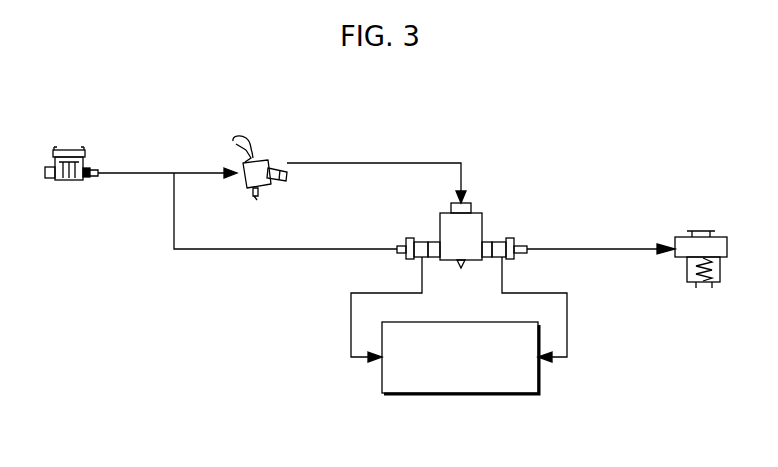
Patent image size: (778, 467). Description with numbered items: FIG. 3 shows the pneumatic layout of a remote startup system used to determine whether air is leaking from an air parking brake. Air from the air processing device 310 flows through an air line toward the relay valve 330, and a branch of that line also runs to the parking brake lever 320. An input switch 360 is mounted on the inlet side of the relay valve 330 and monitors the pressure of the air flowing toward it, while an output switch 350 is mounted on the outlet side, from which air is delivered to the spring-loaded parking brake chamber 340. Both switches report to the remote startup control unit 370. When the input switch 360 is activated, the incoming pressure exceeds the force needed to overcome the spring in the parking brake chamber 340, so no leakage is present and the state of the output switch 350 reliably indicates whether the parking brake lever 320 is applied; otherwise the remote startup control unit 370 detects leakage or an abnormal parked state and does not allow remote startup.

The air processing device 310 is at (86, 153).
The parking brake lever 320 is at (253, 142).
The relay valve 330 is at (478, 213).
The parking brake chamber 340 is at (709, 231).
The output switch 350 is at (512, 238).
The input switch 360 is at (407, 259).
The remote startup control unit 370 is at (514, 395).